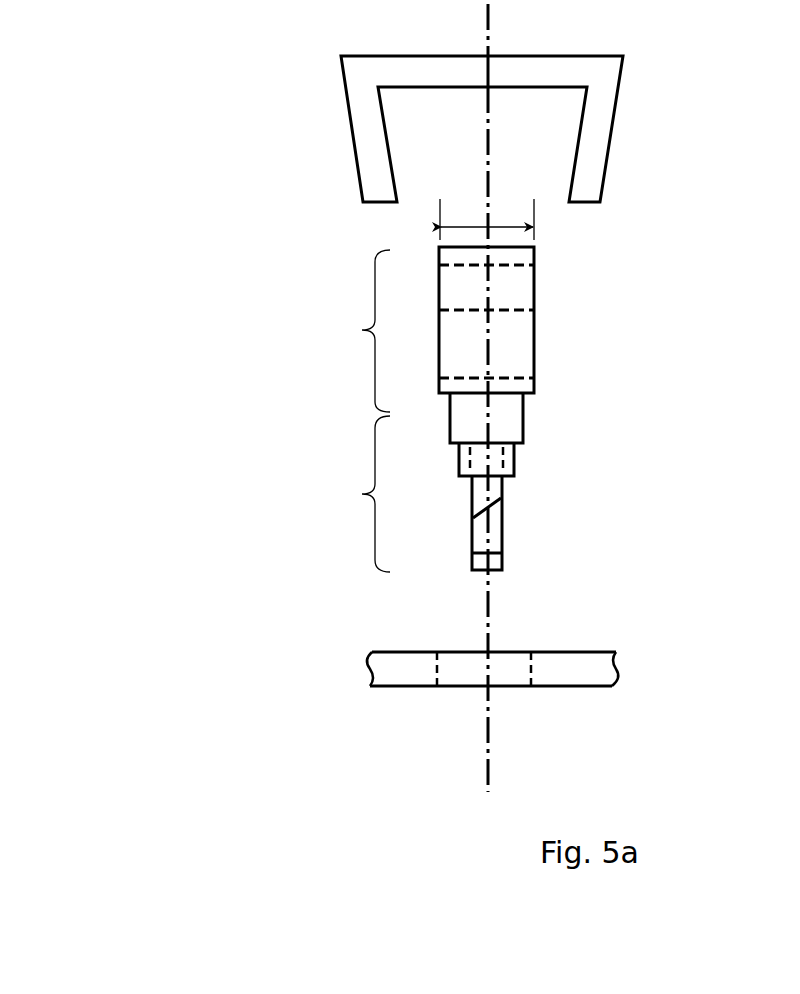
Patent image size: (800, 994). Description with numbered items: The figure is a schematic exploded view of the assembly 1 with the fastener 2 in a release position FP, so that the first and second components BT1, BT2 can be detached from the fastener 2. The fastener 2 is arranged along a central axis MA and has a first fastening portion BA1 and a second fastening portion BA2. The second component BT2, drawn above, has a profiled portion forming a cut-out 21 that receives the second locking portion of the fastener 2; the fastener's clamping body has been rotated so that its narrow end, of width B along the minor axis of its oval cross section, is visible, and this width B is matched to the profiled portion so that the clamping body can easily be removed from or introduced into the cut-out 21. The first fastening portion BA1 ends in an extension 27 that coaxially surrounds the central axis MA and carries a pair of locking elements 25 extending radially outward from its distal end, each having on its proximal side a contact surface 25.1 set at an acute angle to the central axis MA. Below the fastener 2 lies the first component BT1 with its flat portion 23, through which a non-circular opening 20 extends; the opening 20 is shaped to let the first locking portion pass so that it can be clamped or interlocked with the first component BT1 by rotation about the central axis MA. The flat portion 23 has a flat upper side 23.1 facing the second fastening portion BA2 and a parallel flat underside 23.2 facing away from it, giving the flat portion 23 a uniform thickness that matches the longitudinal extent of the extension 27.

The assembly 1 is at (250, 157).
The fastener 2 is at (502, 349).
The non-circular opening 20 is at (473, 686).
The cut-out 21 is at (442, 135).
The flat portion 23 is at (535, 698).
The upper side 23.1 is at (595, 651).
The underside 23.2 is at (582, 692).
The locking element 25 is at (497, 542).
The contact surface 25.1 is at (499, 508).
The extension 27 is at (470, 562).
The first component BT1 is at (422, 666).
The second component BT2 is at (619, 133).
The first fastening portion BA1 is at (366, 494).
The second fastening portion BA2 is at (366, 330).
The release position FP is at (223, 429).
The width B is at (487, 215).
The central axis MA is at (492, 409).